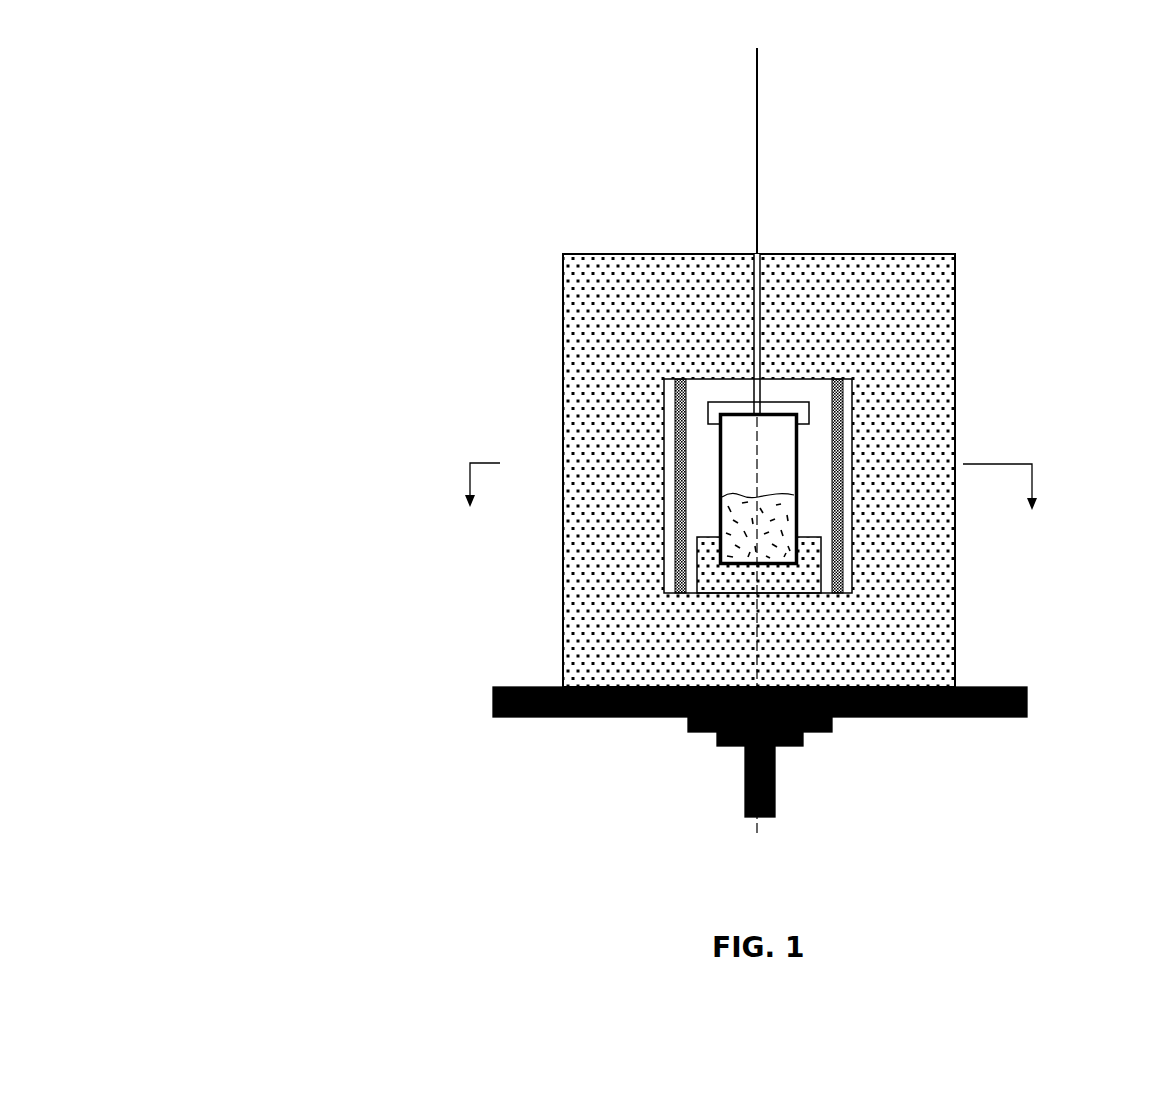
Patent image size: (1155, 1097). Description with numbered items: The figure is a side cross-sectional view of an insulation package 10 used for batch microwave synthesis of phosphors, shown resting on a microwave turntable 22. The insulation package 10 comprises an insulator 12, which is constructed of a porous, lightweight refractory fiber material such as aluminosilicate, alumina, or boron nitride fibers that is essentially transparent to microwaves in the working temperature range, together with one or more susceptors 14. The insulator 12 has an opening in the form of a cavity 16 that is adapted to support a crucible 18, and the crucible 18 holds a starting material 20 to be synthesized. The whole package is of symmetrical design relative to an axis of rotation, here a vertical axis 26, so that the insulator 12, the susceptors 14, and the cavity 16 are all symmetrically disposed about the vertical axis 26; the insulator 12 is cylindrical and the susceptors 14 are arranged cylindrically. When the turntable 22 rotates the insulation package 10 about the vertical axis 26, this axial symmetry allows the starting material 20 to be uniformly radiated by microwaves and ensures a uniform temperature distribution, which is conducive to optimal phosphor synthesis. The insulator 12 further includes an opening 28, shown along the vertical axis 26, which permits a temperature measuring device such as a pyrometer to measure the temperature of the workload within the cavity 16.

The insulation package 10 is at (657, 442).
The insulator 12 is at (878, 644).
The susceptors 14 is at (848, 389).
The cavity 16 is at (822, 509).
The crucible 18 is at (704, 489).
The starting material 20 is at (726, 519).
The turntable 22 is at (812, 752).
The vertical axis 26 is at (759, 120).
The opening 28 is at (758, 303).